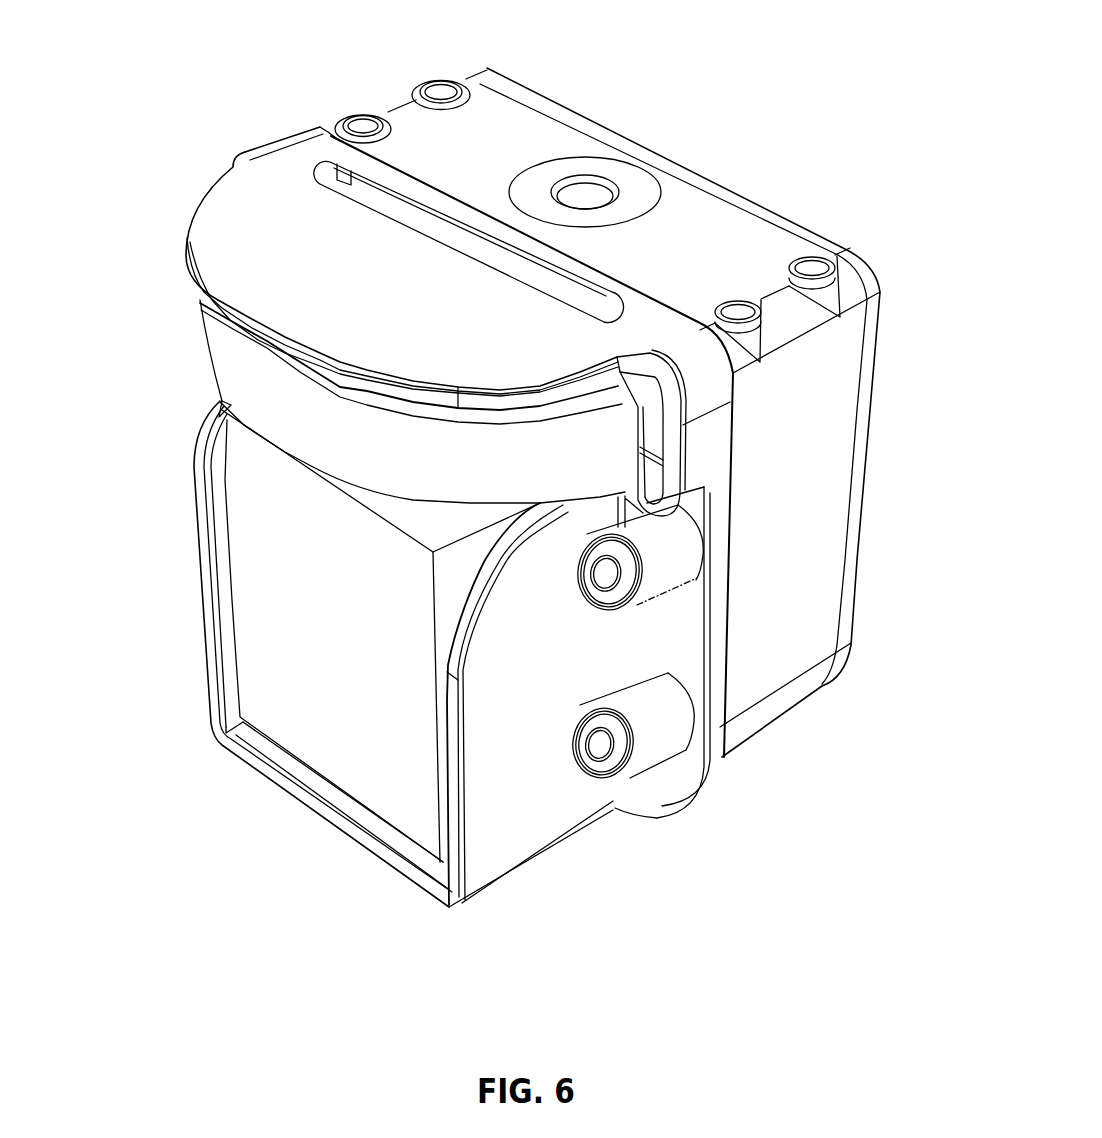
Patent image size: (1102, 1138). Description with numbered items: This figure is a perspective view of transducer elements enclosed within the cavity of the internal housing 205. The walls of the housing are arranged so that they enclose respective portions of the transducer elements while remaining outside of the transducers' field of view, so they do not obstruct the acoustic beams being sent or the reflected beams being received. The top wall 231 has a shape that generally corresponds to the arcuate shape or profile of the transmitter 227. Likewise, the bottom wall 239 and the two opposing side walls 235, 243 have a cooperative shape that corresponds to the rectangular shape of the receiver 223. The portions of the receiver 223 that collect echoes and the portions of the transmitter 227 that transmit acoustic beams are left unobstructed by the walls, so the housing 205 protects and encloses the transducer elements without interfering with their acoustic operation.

The internal housing 205 is at (693, 140).
The top wall 231 is at (230, 205).
The transmitter 227 is at (220, 354).
The receiver 223 is at (231, 527).
The side wall 235 is at (210, 662).
The bottom wall 239 is at (312, 795).
The side wall 243 is at (494, 794).